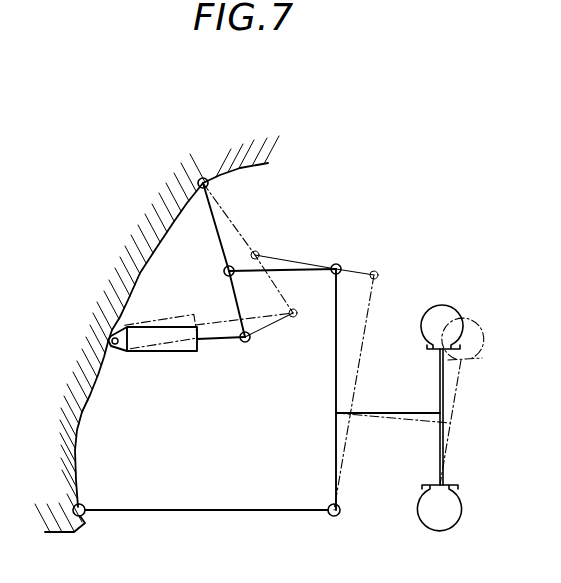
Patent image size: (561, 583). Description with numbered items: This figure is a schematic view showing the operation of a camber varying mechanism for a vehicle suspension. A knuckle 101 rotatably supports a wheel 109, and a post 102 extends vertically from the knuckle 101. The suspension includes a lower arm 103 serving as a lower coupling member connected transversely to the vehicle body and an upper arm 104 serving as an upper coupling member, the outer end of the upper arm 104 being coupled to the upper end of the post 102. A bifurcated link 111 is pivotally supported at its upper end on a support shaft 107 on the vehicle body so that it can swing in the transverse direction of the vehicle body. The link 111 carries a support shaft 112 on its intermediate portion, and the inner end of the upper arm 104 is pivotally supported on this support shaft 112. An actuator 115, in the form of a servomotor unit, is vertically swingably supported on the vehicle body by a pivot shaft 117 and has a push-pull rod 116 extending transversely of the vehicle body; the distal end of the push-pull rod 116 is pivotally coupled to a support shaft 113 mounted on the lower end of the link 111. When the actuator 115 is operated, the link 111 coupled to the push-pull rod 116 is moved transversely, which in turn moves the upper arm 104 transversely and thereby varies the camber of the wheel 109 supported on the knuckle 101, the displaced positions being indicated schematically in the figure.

The knuckle 101 is at (336, 455).
The post 102 is at (336, 354).
The lower arm 103 is at (193, 513).
The upper arm 104 is at (290, 268).
The support shaft 107 is at (195, 176).
The wheel 109 is at (441, 309).
The bifurcated link 111 is at (222, 240).
The support shaft 112 is at (224, 273).
The support shaft 113 is at (248, 343).
The actuator 115 is at (157, 355).
The push-pull rod 116 is at (220, 343).
The pivot shaft 117 is at (106, 340).